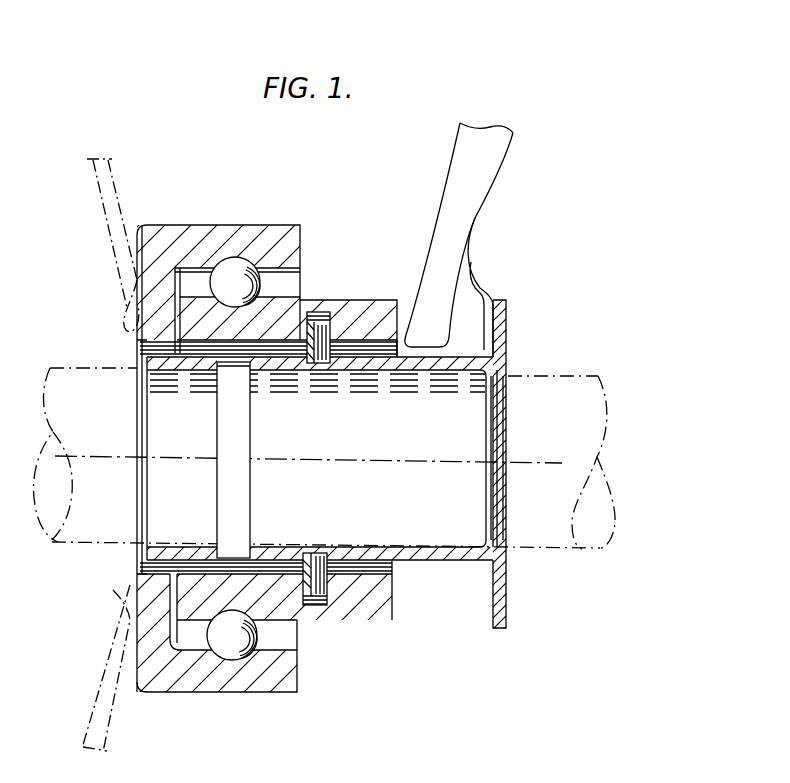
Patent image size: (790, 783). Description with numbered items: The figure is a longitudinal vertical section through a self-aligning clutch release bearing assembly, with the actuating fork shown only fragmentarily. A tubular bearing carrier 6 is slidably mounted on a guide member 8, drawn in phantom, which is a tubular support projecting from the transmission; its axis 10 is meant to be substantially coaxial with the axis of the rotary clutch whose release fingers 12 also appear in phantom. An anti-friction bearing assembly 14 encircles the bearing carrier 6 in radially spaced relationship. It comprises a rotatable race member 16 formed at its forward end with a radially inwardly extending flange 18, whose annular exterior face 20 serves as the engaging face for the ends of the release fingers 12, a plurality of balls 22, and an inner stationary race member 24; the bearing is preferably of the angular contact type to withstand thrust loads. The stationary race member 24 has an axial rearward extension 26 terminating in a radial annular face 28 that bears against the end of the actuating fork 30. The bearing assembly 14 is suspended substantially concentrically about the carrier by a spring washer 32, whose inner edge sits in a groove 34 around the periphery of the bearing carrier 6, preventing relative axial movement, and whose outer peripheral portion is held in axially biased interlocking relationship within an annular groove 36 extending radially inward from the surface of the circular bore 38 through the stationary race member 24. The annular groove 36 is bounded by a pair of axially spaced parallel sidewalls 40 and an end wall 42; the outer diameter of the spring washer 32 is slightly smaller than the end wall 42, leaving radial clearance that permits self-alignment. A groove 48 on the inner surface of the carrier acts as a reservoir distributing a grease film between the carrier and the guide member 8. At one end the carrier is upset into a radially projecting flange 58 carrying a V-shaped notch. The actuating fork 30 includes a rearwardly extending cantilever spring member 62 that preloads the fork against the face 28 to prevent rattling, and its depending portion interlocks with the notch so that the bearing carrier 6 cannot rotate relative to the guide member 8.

The tubular bearing carrier 6 is at (398, 365).
The guide member 8 is at (598, 395).
The axis 10 is at (535, 460).
The release fingers 12 is at (105, 213).
The anti-friction bearing assembly 14 is at (298, 222).
The rotatable race member 16 is at (237, 233).
The radially inwardly extending flange 18 is at (157, 303).
The annular exterior face 20 is at (142, 331).
The balls 22 is at (262, 287).
The inner stationary race member 24 is at (260, 322).
The axial rearward extension 26 is at (373, 300).
The radial annular face 28 is at (397, 322).
The actuating fork 30 is at (420, 235).
The spring washer 32 is at (342, 563).
The groove 34 is at (320, 563).
The annular groove 36 is at (305, 317).
The circular bore 38 is at (277, 323).
The sidewalls 40 is at (302, 582).
The end wall 42 is at (317, 600).
The groove 48 is at (233, 373).
The radially projecting flange 58 is at (505, 587).
The cantilever spring member 62 is at (480, 280).